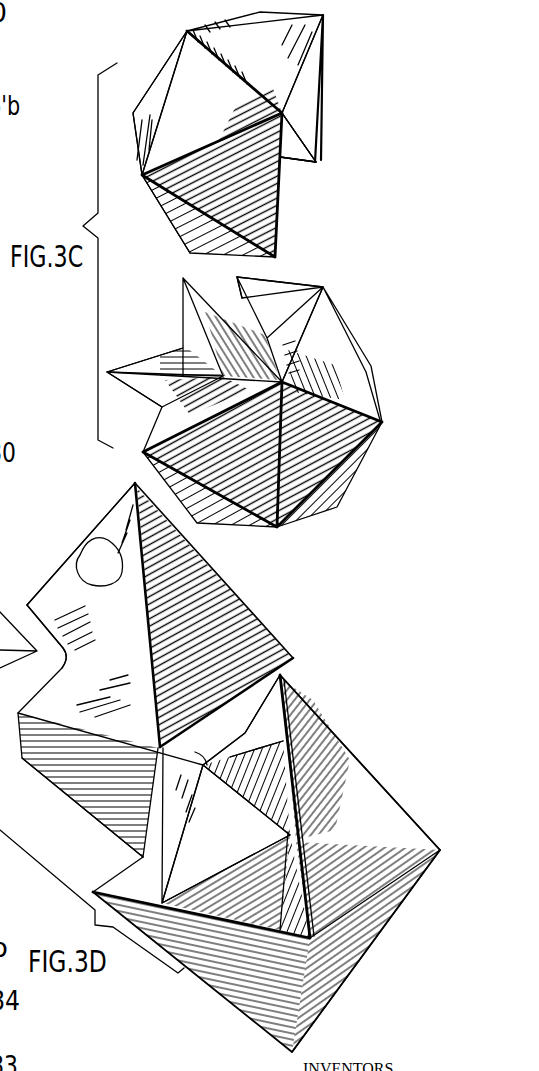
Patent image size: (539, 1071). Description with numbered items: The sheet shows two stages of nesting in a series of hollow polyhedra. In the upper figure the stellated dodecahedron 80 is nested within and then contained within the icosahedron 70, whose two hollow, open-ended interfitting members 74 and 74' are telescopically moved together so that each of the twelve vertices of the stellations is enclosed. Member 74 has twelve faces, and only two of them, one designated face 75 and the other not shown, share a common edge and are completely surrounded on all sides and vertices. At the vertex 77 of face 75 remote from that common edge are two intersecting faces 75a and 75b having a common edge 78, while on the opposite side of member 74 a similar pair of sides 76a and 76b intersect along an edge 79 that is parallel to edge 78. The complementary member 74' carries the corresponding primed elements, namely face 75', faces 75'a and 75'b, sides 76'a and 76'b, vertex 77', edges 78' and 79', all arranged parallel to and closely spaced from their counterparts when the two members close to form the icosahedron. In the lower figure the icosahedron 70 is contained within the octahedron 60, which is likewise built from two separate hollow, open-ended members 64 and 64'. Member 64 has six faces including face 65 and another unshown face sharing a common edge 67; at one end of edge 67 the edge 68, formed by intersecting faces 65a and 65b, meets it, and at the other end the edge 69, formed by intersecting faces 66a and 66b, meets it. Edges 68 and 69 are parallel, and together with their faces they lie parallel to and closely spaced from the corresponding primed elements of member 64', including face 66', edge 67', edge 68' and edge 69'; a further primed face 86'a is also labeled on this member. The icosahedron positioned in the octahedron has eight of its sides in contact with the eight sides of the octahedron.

In FIG. 3D, the octahedron 60 is at (346, 614).
In FIG. 3D, the member of the octahedron 64 is at (266, 863).
In FIG. 3D, the complementary member of the octahedron 64' is at (175, 670).
In FIG. 3D, the face of member 64 65 is at (125, 647).
In FIG. 3D, the intersecting face 65a is at (132, 873).
In FIG. 3D, the intersecting face 65b is at (80, 790).
In FIG. 3D, the face of member 64' 66' is at (99, 562).
In FIG. 3D, the intersecting face 66a is at (265, 730).
In FIG. 3D, the intersecting face 66b is at (373, 813).
In FIG. 3D, the common edge 67 is at (366, 951).
In FIG. 3D, the common edge of member 64' 67' is at (81, 544).
In FIG. 3D, the intersecting edge 68 is at (201, 972).
In FIG. 3D, the intersecting edge of member 64' 68' is at (81, 785).
In FIG. 3D, the intersecting edge 69 is at (360, 762).
In FIG. 3D, the intersecting edge of member 64' 69' is at (215, 617).
In FIG. 3C, the icosahedron 70 is at (353, 40).
In FIG. 3D, the icosahedron 70 is at (241, 837).
In FIG. 3C, the member of the icosahedron 74 is at (263, 402).
In FIG. 3C, the complementary member of the icosahedron 74' is at (192, 137).
In FIG. 3C, the face of member 74 75 is at (340, 454).
In FIG. 3C, the intersecting face 75a is at (162, 478).
In FIG. 3C, the intersecting face 75b is at (198, 445).
In FIG. 3C, the face of member 74' 75' is at (145, 103).
In FIG. 3C, the intersecting face of member 74' 75'a is at (208, 222).
In FIG. 3C, the intersecting face of member 74' 75'b is at (230, 185).
In FIG. 3C, the side 76a is at (258, 288).
In FIG. 3C, the side 76b is at (327, 283).
In FIG. 3C, the side of member 74' 76'a is at (323, 183).
In FIG. 3C, the side of member 74' 76'b is at (332, 88).
In FIG. 3C, the vertex 77 is at (295, 471).
In FIG. 3C, the vertex of member 74' 77' is at (120, 203).
In FIG. 3C, the common edge 78 is at (210, 509).
In FIG. 3C, the common edge of member 74' 78' is at (197, 216).
In FIG. 3C, the edge 79 is at (306, 266).
In FIG. 3C, the edge of member 74' 79' is at (331, 137).
In FIG. 3C, the stellated dodecahedron 80 is at (107, 370).
In FIG. 3D, the face 86'a is at (33, 597).